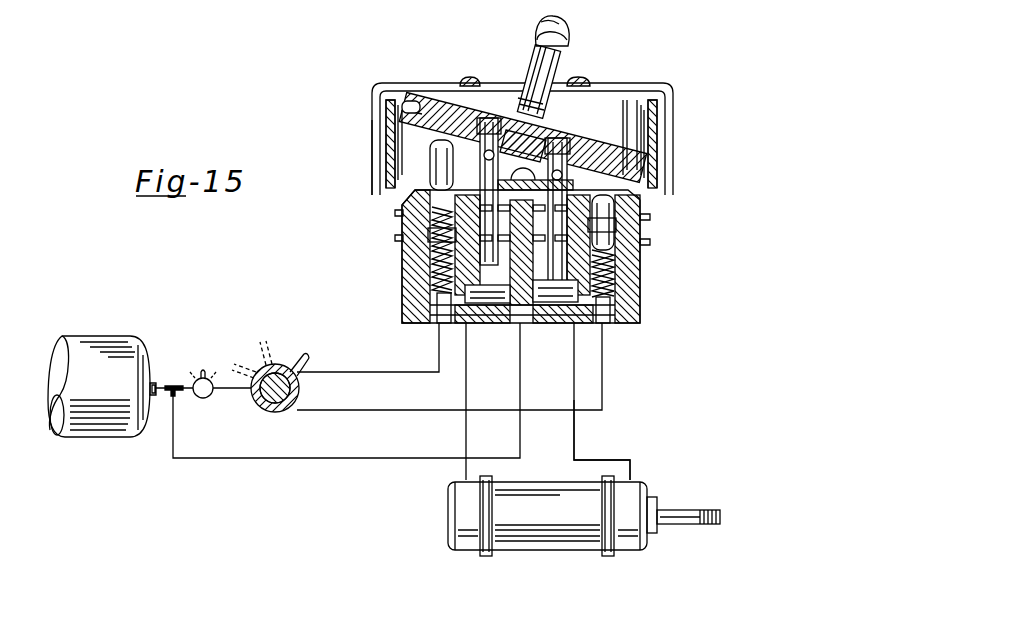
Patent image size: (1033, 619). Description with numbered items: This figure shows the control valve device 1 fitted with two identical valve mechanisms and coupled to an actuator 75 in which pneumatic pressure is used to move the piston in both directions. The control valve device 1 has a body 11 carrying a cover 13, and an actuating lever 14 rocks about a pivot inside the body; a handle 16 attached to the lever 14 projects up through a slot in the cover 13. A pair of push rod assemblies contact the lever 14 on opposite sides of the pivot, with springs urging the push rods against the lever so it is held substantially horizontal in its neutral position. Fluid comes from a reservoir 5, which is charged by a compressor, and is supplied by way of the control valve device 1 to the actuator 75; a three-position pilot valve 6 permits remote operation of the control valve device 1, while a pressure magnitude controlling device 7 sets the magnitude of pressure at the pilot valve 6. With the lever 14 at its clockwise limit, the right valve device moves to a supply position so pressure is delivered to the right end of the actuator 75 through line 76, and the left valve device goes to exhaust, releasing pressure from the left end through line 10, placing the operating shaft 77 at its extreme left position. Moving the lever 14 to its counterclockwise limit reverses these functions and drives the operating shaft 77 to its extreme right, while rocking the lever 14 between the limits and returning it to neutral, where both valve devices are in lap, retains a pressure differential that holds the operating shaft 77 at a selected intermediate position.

The control valve device 1 is at (666, 84).
The reservoir 5 is at (100, 438).
The three-position pilot valve 6 is at (266, 405).
The pressure magnitude controlling device 7 is at (203, 398).
The line 10 is at (462, 432).
The body 11 is at (633, 312).
The cover 13 is at (386, 82).
The actuating lever 14 is at (421, 100).
The handle 16 is at (568, 38).
The actuator 75 is at (553, 546).
The line 76 is at (576, 442).
The operating shaft 77 is at (675, 524).